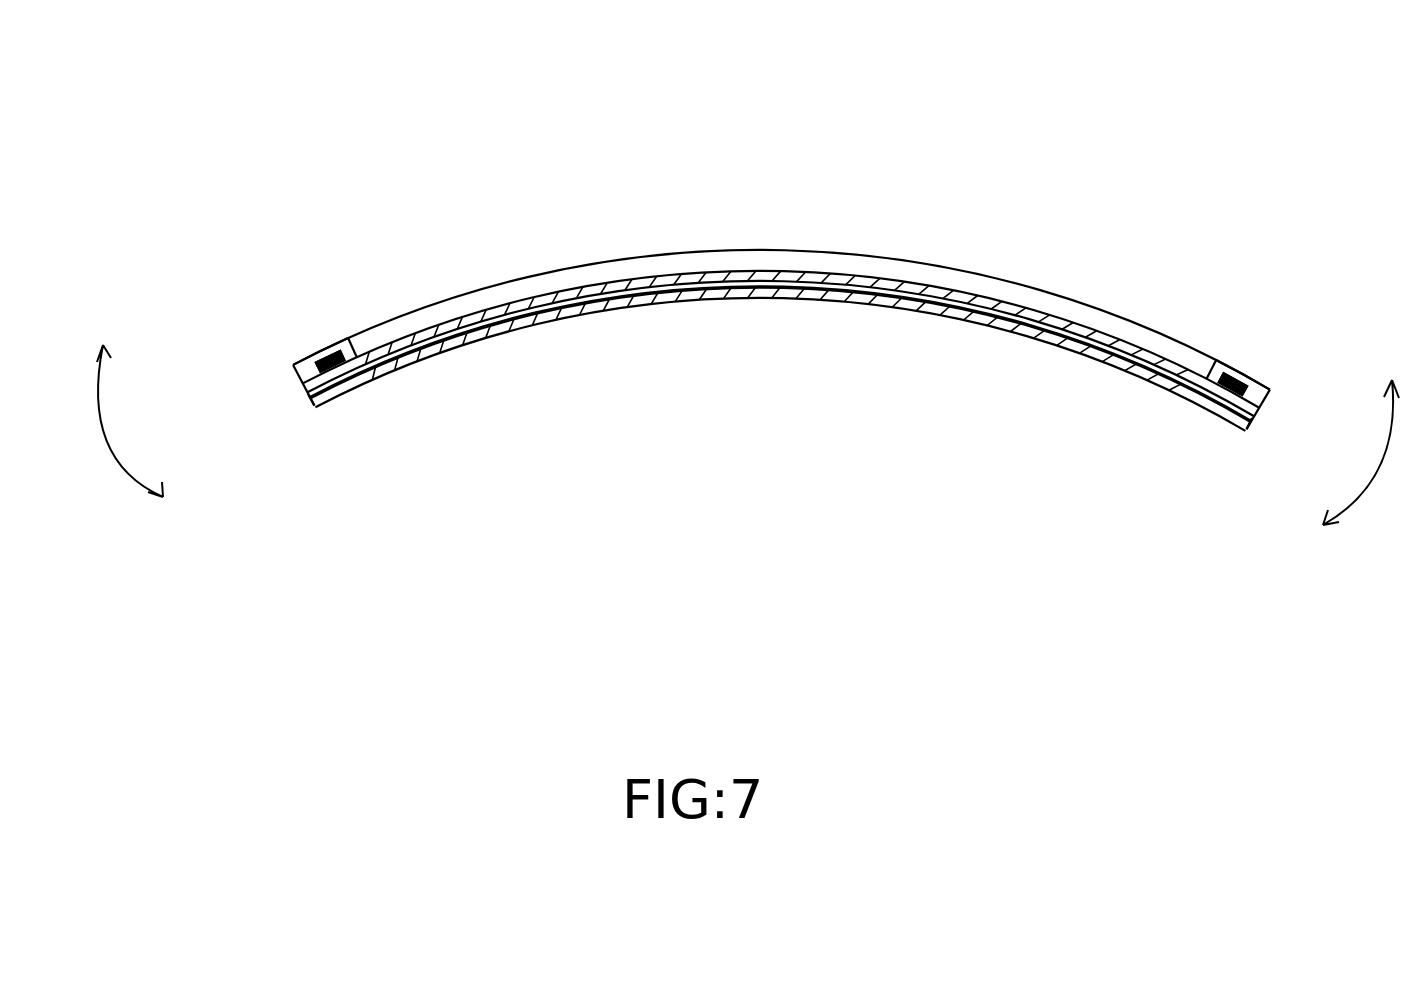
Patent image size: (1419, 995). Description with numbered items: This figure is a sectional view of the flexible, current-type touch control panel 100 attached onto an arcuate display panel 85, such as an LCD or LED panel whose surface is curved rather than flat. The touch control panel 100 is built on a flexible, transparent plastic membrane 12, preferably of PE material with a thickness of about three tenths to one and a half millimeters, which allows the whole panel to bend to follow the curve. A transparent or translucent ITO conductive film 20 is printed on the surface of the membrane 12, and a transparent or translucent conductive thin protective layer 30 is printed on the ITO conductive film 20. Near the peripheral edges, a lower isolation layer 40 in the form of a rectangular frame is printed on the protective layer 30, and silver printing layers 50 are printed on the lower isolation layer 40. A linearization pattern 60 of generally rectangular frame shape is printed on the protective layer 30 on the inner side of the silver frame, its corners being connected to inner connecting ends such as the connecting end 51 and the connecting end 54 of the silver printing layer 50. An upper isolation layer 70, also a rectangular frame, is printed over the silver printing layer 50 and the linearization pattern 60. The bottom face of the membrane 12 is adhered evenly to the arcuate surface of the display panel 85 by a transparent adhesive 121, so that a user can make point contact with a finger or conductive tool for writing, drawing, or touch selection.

The touch control panel 100 is at (818, 180).
The lower isolation layer 40 is at (297, 377).
The silver printing layer 50 is at (313, 350).
The inner connecting end 51 is at (333, 348).
The inner connecting end 54 is at (1245, 380).
The upper isolation layer 70 is at (345, 343).
The transparent plastic membrane 12 is at (510, 317).
The ITO conductive film 20 is at (679, 295).
The protective layer 30 is at (820, 290).
The display panel 85 is at (982, 322).
The linearization pattern 60 is at (322, 393).
The transparent adhesive 121 is at (308, 397).